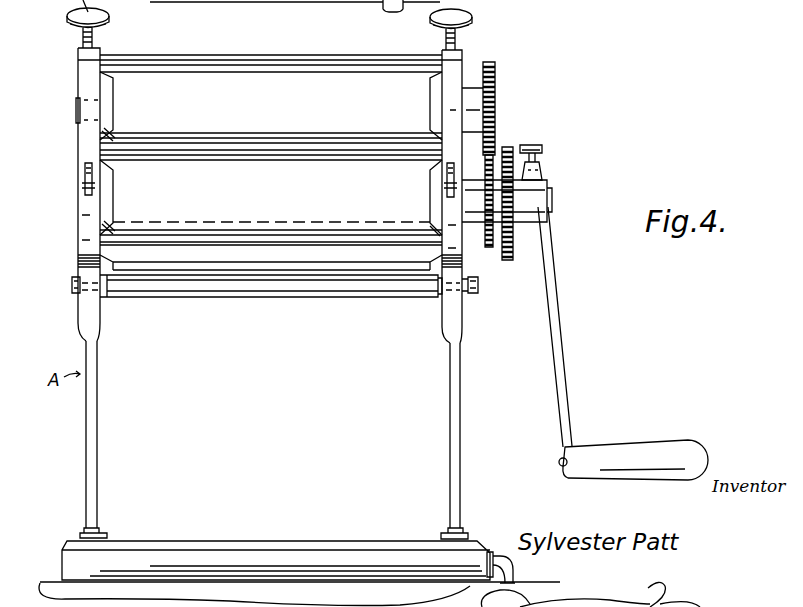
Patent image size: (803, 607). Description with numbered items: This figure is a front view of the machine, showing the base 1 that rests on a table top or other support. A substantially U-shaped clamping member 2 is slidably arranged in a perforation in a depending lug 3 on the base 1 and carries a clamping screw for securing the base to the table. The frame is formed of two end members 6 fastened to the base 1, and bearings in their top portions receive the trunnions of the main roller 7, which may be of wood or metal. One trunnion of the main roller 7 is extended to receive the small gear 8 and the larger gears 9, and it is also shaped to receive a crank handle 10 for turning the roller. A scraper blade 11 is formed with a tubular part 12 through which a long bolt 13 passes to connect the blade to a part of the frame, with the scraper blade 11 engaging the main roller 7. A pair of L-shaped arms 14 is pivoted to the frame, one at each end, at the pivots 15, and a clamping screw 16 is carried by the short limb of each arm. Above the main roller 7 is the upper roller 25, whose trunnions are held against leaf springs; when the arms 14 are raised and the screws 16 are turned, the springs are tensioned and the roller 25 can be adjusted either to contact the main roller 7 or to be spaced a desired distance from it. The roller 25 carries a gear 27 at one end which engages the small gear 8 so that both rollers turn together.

The base 1 is at (178, 552).
The clamping member 2 is at (515, 577).
The depending lug 3 is at (490, 549).
The end members 6 is at (86, 411).
The main roller 7 is at (147, 232).
The small gear 8 is at (490, 250).
The larger gears 9 is at (514, 243).
The crank handle 10 is at (560, 327).
The scraper blade 11 is at (398, 260).
The tubular part 12 is at (330, 292).
The long bolt 13 is at (476, 288).
The L-shaped arms 14 is at (83, 140).
The pivot 15 is at (80, 181).
The clamping screw 16 is at (468, 14).
The roller 25 is at (265, 88).
The gear 27 is at (496, 76).